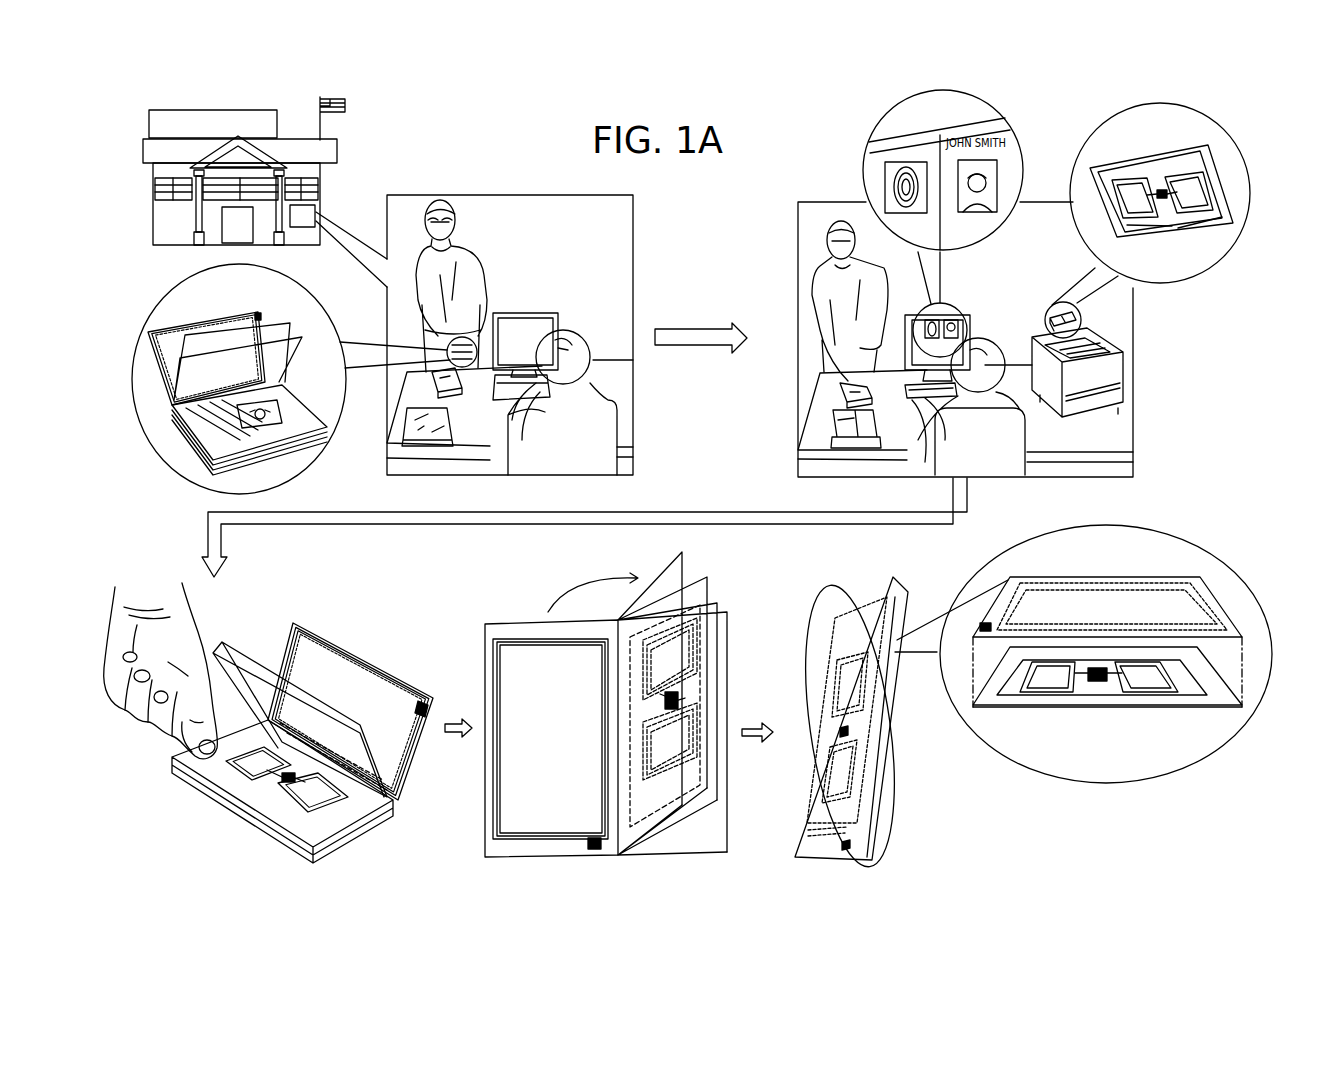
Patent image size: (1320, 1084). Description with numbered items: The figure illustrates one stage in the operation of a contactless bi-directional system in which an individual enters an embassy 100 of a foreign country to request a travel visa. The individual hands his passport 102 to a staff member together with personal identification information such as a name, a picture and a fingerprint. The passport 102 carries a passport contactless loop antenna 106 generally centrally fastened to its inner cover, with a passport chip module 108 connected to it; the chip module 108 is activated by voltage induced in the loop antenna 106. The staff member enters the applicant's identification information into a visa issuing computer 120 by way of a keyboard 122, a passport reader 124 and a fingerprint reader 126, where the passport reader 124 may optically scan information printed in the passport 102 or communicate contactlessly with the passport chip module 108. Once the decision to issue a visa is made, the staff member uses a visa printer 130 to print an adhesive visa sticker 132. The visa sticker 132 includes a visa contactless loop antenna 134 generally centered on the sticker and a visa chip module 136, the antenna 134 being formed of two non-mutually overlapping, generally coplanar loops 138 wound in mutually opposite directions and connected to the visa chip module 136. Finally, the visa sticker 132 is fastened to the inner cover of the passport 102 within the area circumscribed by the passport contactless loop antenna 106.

The embassy 100 is at (337, 151).
The passport 102 is at (178, 448).
The passport contactless loop antenna 106 is at (200, 330).
The passport chip module 108 is at (258, 322).
The visa issuing computer 120 is at (560, 330).
The keyboard 122 is at (521, 390).
The passport reader 124 is at (413, 432).
The fingerprint reader 126 is at (432, 382).
The visa printer 130 is at (1100, 372).
The adhesive visa sticker 132 is at (1222, 202).
The visa contactless loop antenna 134 is at (1173, 228).
The visa chip module 136 is at (1158, 188).
The non-mutually overlapping generally coplanar loops 138 is at (1112, 180).